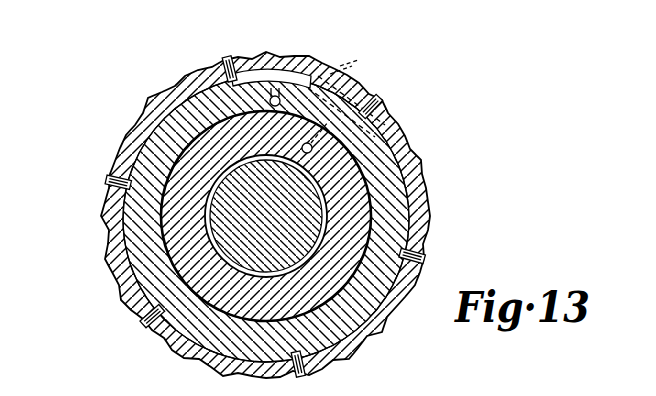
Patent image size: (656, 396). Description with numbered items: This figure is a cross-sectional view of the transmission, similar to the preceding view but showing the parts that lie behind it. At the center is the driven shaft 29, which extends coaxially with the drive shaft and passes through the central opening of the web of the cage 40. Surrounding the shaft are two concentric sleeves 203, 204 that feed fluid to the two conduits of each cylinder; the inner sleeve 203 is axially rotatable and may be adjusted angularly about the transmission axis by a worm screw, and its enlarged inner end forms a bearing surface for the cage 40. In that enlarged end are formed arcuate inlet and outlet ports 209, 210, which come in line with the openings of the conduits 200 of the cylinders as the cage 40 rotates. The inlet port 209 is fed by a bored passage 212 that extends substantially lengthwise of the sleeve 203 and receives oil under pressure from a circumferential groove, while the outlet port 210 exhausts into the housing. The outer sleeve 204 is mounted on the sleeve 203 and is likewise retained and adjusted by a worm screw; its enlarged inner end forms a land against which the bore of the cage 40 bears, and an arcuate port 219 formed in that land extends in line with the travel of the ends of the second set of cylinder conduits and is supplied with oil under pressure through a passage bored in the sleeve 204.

The cage 40 is at (268, 207).
The conduits 200 is at (243, 44).
The arcuate port 219 is at (278, 72).
The arcuate inlet port 209 is at (355, 72).
The arcuate outlet port 210 is at (392, 120).
The bored passage 212 is at (312, 150).
The sleeve 203 is at (358, 205).
The sleeve 204 is at (395, 208).
The driven shaft 29 is at (218, 224).